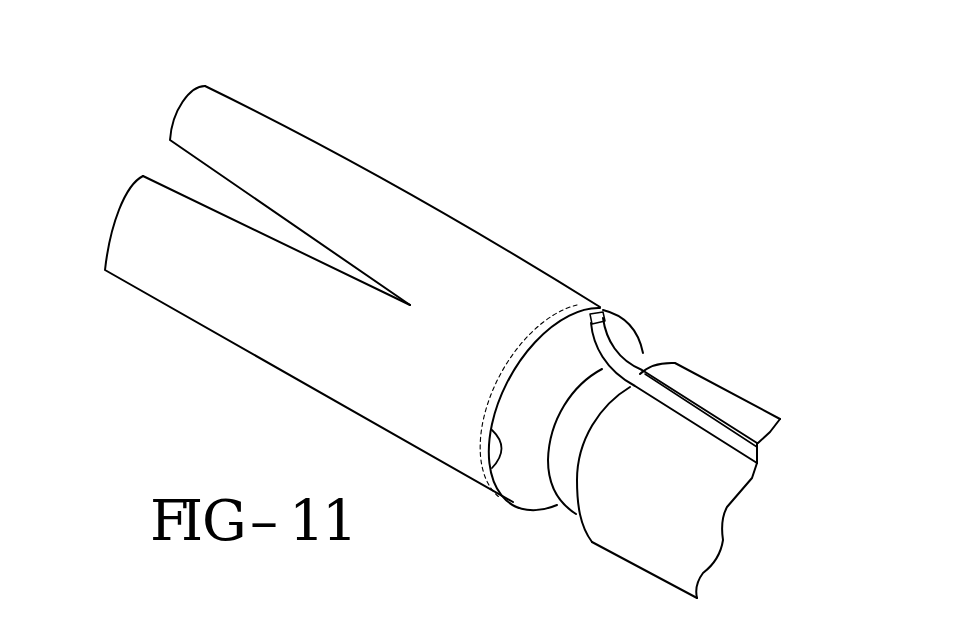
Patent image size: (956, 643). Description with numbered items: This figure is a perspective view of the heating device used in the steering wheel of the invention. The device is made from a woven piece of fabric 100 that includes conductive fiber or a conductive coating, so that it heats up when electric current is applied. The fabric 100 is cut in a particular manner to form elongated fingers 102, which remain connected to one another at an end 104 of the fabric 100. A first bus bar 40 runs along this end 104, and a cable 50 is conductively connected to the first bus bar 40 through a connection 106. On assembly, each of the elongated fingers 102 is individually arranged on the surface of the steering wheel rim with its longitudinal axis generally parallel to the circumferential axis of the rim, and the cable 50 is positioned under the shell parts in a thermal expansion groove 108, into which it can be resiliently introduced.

The fabric 100 is at (455, 216).
The elongated fingers 102 is at (252, 127).
The first bus bar 40 is at (558, 318).
The end of the fabric 104 is at (500, 445).
The connection 106 is at (600, 313).
The cable 50 is at (620, 372).
The thermal expansion grooves 108 is at (732, 427).